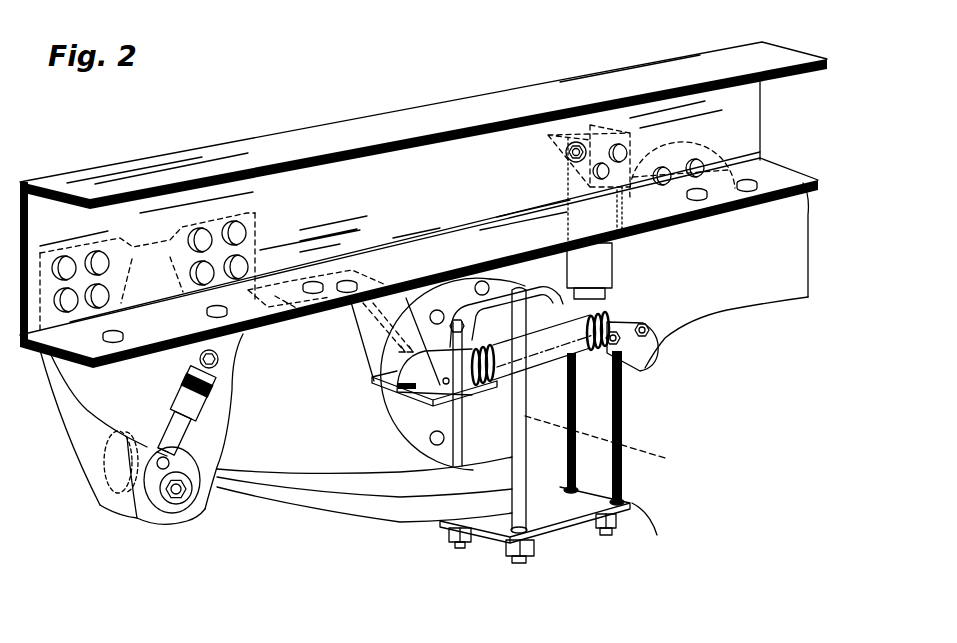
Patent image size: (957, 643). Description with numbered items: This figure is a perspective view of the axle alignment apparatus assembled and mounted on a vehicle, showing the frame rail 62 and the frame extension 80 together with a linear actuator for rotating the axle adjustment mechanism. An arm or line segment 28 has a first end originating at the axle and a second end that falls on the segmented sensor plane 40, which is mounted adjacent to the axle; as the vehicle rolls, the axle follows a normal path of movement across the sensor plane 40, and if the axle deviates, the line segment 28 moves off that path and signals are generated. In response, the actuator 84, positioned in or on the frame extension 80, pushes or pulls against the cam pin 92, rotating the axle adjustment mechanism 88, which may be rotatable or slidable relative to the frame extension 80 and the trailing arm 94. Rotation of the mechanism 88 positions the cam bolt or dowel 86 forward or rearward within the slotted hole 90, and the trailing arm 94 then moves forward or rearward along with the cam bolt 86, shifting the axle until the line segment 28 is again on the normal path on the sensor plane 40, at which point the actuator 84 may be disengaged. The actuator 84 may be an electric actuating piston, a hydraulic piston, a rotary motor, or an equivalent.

The frame rail 62 is at (45, 181).
The frame extension 80 is at (218, 403).
The actuator 84 is at (167, 400).
The cam bolt or dowel 86 is at (181, 513).
The axle adjustment mechanism 88 is at (118, 503).
The slotted hole 90 is at (195, 494).
The cam pin 92 is at (168, 459).
The trailing arm 94 is at (344, 512).
The segmented sensor plane 40 is at (376, 381).
The arm or line segment 28 is at (540, 352).